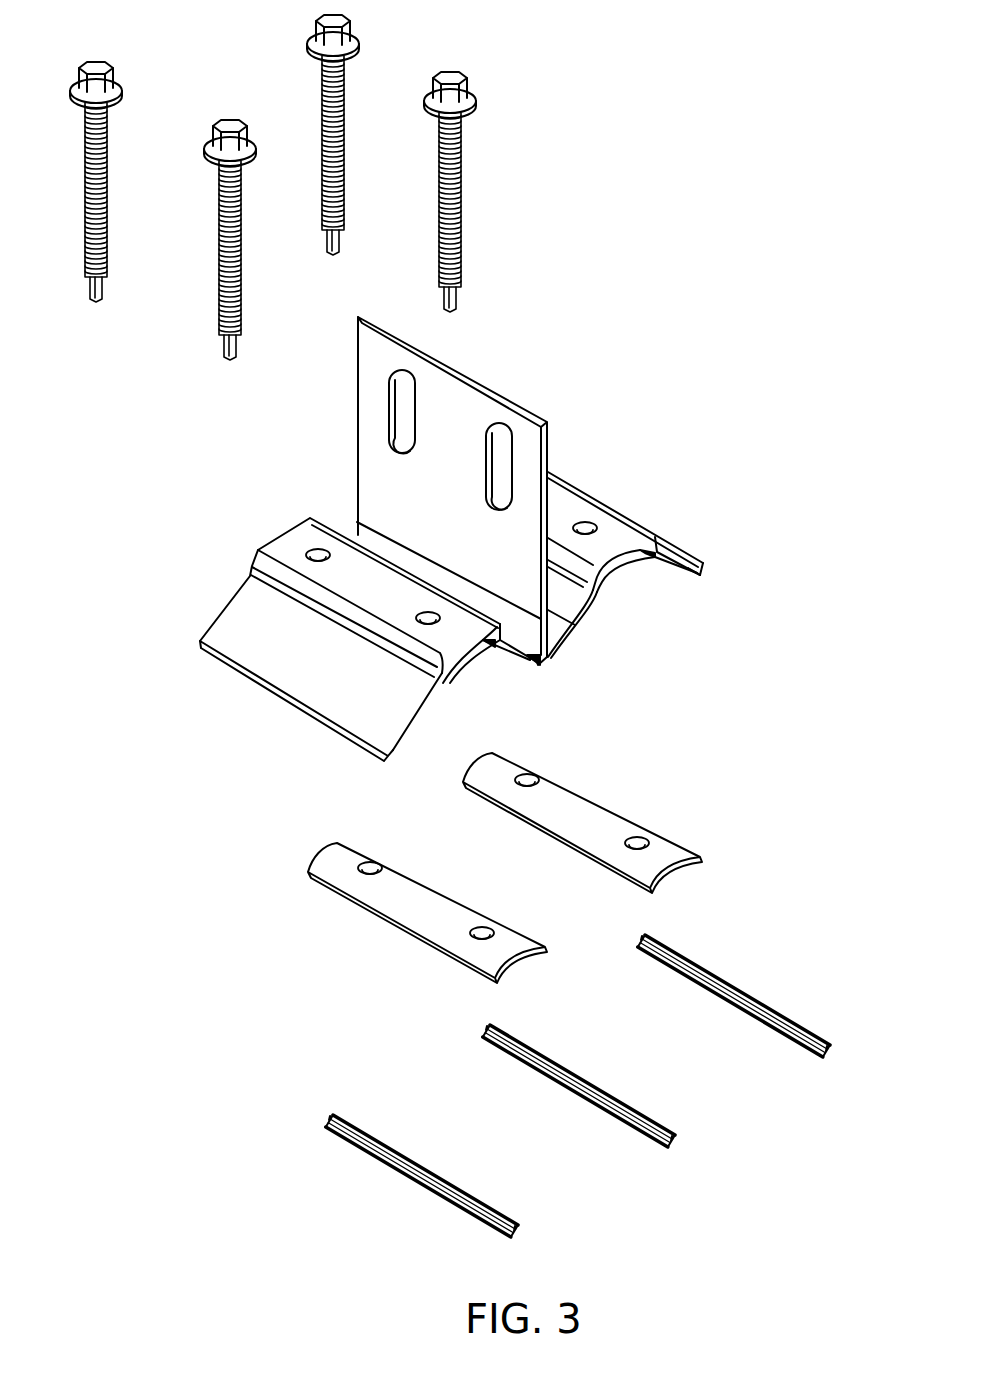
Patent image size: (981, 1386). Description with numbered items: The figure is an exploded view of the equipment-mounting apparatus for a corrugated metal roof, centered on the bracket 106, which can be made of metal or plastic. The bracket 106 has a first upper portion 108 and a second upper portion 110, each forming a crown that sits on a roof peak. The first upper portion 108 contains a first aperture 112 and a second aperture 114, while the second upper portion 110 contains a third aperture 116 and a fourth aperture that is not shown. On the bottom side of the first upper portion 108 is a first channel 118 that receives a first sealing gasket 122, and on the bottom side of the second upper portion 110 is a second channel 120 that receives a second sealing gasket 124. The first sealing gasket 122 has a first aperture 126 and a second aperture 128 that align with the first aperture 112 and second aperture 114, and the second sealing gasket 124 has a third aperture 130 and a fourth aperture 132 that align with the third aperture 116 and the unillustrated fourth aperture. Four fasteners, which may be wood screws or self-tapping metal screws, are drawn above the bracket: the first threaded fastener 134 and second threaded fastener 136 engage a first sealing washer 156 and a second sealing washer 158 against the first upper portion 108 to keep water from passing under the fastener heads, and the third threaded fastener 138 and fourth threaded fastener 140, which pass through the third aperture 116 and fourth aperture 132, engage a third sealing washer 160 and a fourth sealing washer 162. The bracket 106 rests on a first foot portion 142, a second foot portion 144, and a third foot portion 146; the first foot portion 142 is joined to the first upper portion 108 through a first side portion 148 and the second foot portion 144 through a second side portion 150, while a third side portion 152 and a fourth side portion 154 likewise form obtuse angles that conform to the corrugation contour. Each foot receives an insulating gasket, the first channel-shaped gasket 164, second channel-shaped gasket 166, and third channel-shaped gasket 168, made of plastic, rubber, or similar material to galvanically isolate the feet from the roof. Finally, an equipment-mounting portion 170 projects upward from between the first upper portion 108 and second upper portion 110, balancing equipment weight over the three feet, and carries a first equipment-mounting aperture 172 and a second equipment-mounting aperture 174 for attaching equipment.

The bracket 106 is at (468, 547).
The first upper portion 108 is at (311, 613).
The second upper portion 110 is at (681, 566).
The first aperture 112 is at (317, 548).
The second aperture 114 is at (430, 612).
The third aperture 116 is at (585, 522).
The first channel 118 is at (463, 652).
The second channel 120 is at (639, 556).
The first sealing gasket 122 is at (427, 901).
The second sealing gasket 124 is at (582, 791).
The first aperture 126 is at (371, 862).
The second aperture 128 is at (482, 926).
The third aperture 130 is at (640, 836).
The fourth aperture 132 is at (527, 773).
The first threaded fastener 134 is at (152, 182).
The second threaded fastener 136 is at (231, 240).
The third threaded fastener 138 is at (504, 192).
The fourth threaded fastener 140 is at (389, 135).
The first foot portion 142 is at (383, 753).
The second foot portion 144 is at (543, 665).
The third foot portion 146 is at (705, 566).
The first side portion 148 is at (221, 605).
The second side portion 150 is at (347, 521).
The third side portion 152 is at (581, 610).
The fourth side portion 154 is at (670, 548).
The first sealing washer 156 is at (122, 90).
The second sealing washer 158 is at (204, 150).
The third sealing washer 160 is at (476, 98).
The fourth sealing washer 162 is at (359, 44).
The first channel-shaped gasket 164 is at (472, 1192).
The second channel-shaped gasket 166 is at (639, 1108).
The third channel-shaped gasket 168 is at (814, 1031).
The equipment-mounting portion 170 is at (401, 487).
The first equipment-mounting aperture 172 is at (389, 395).
The second equipment-mounting aperture 174 is at (499, 424).